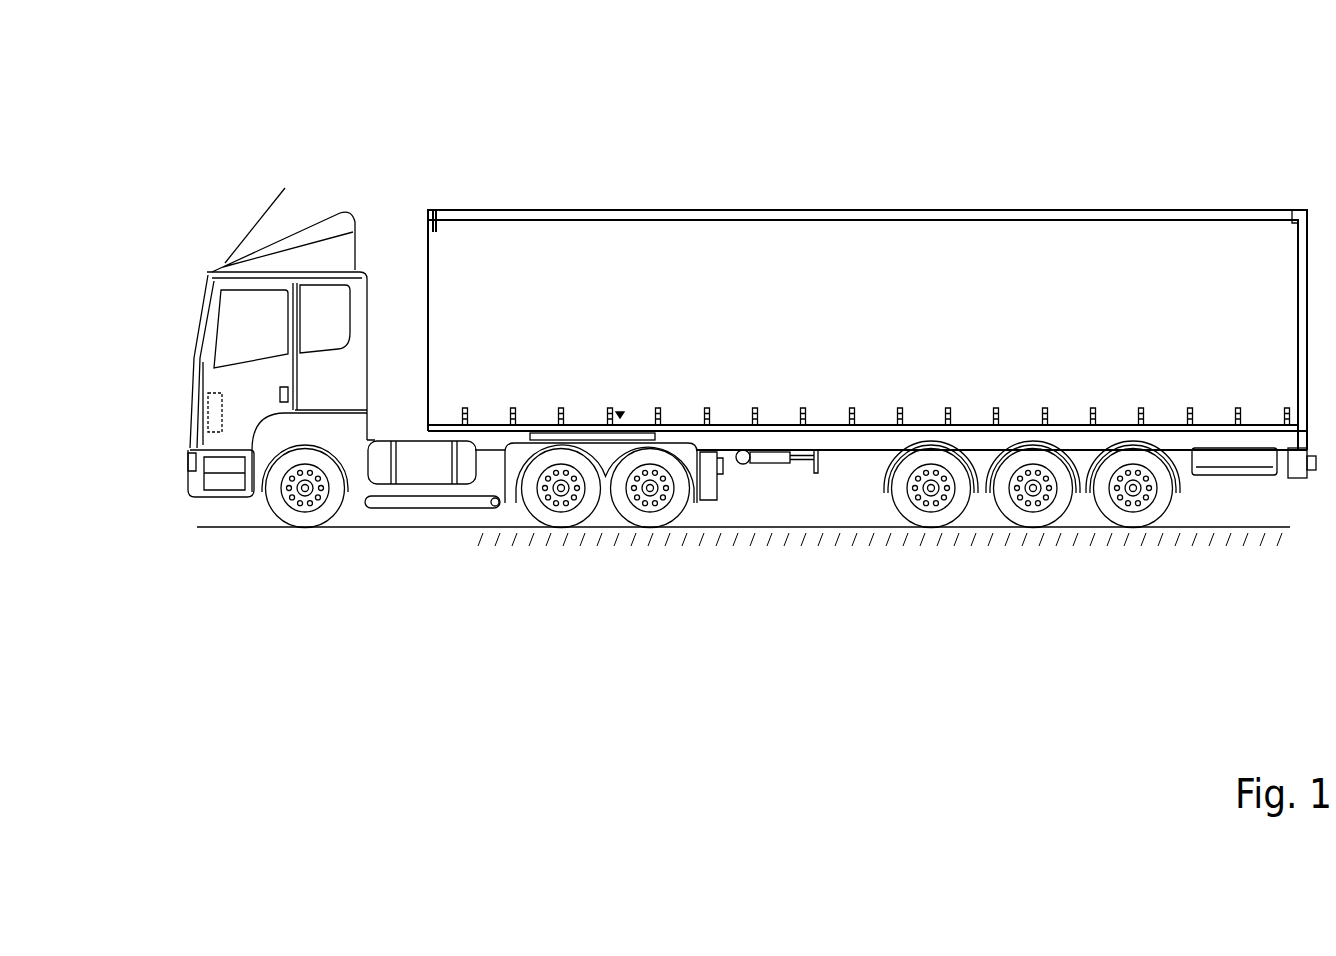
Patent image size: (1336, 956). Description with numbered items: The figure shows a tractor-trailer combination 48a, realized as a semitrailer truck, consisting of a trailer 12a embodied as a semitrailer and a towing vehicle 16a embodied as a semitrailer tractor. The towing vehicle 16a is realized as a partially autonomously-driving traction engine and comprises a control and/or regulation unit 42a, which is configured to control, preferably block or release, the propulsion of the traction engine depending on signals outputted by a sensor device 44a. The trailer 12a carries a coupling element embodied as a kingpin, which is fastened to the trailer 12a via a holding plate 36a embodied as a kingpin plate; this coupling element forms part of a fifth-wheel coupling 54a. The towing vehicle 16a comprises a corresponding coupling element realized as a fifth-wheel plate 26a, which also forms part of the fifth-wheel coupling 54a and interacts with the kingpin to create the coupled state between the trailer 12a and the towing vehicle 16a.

The trailer 12a is at (934, 268).
The towing vehicle 16a is at (320, 257).
The fifth-wheel plate 26a is at (607, 437).
The holding plate 36a is at (630, 435).
The control and/or regulation unit 42a is at (197, 421).
The sensor device 44a is at (578, 425).
The tractor-trailer combination 48a is at (576, 170).
The fifth-wheel coupling 54a is at (620, 414).